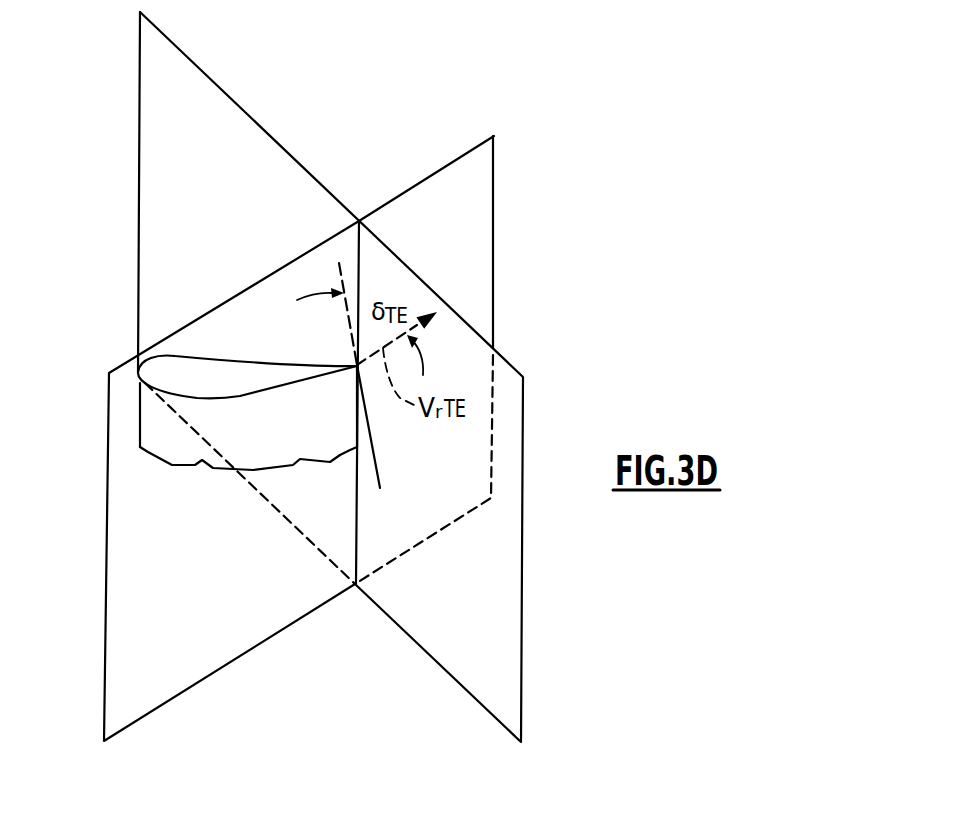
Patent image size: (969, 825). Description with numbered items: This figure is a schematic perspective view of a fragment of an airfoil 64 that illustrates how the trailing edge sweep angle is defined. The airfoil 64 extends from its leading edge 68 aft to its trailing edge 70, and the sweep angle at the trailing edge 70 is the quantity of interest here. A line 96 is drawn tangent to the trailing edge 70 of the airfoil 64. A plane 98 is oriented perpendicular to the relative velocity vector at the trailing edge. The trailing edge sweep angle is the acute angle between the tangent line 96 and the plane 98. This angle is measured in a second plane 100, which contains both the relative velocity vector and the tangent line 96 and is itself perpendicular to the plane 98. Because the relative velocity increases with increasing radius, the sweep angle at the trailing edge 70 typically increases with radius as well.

The airfoil 64 is at (284, 442).
The leading edge 68 is at (140, 422).
The trailing edge 70 is at (357, 428).
The tangent line 96 is at (376, 467).
The plane perpendicular to the relative velocity vector 98 is at (289, 195).
The measurement plane 100 is at (480, 222).